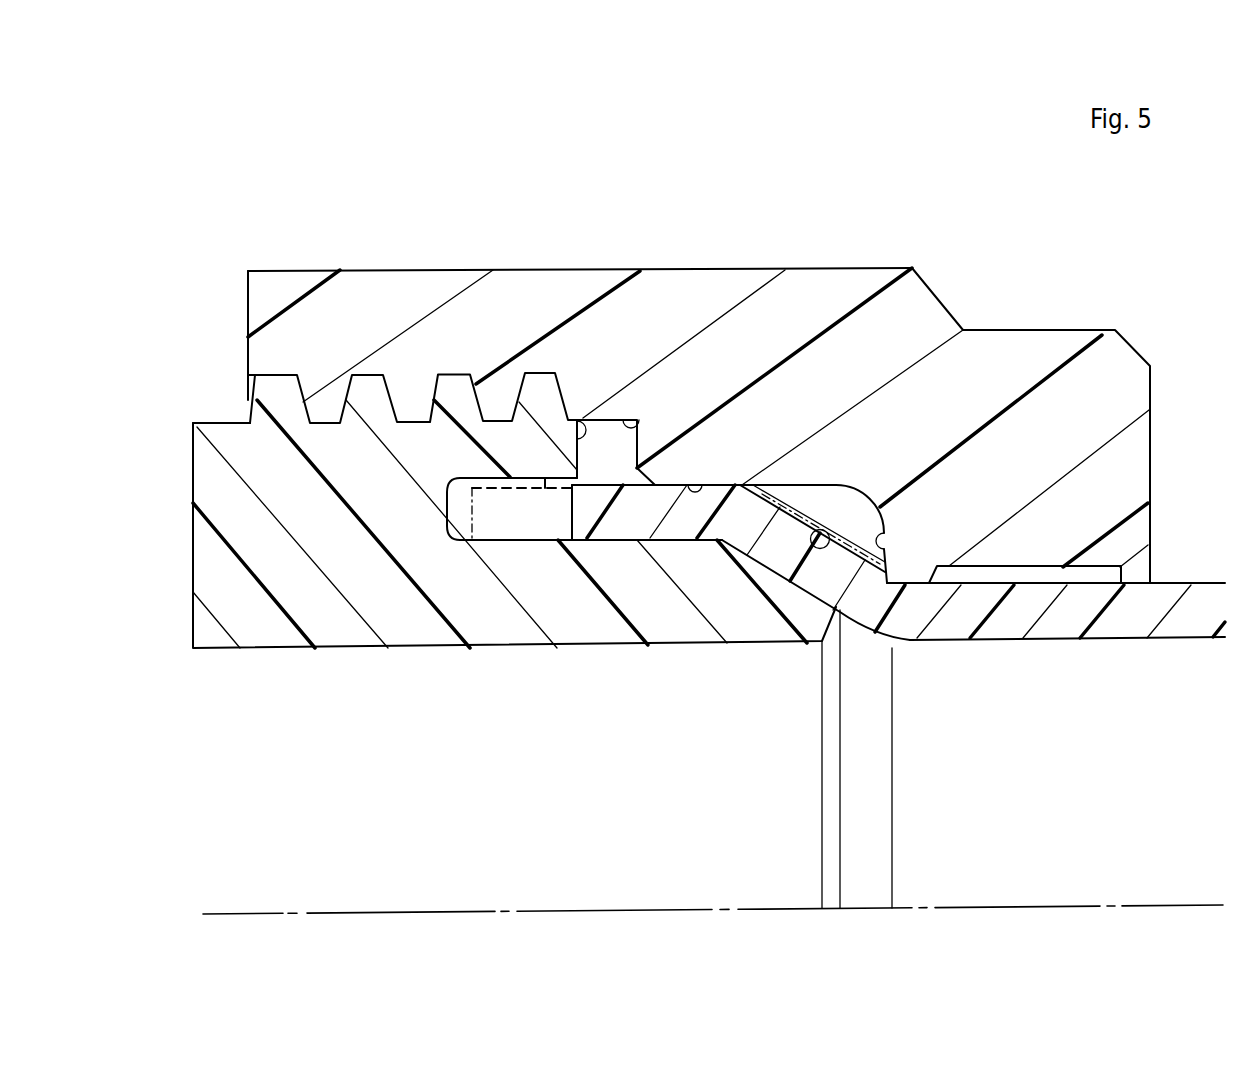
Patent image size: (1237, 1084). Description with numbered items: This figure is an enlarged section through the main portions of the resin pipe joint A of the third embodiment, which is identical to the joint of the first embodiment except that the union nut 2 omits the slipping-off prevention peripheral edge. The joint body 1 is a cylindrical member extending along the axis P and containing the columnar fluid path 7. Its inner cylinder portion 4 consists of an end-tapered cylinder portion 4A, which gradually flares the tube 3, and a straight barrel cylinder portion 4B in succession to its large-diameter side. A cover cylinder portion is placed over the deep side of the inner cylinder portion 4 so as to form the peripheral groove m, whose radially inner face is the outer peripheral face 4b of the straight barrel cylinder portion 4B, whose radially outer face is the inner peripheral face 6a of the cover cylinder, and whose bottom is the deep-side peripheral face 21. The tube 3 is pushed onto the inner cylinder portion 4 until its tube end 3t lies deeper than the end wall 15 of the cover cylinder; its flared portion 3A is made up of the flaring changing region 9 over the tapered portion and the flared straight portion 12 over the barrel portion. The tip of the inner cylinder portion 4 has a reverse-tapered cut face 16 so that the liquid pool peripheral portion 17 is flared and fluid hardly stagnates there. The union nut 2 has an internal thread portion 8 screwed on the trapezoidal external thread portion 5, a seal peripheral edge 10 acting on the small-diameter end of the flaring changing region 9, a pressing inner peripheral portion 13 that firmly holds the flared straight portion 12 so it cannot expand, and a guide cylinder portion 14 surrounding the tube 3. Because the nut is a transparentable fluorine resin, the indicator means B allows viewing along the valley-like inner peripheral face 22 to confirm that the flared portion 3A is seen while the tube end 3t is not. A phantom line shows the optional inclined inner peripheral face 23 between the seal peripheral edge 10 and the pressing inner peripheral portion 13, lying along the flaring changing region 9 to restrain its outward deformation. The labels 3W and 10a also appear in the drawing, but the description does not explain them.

The joint body 1 is at (224, 421).
The union nut 2 is at (963, 313).
The tube 3 is at (1173, 587).
The flared portion 3A is at (690, 544).
The tube end 3t is at (450, 537).
The tire width direction 3W is at (1047, 825).
The inner cylinder portion 4 is at (514, 538).
The end-tapered cylinder portion 4A is at (800, 620).
The straight barrel cylinder portion 4B is at (432, 571).
The outer peripheral face of the straight barrel cylinder portion 4b is at (668, 538).
The external thread portion 5 is at (370, 373).
The inner peripheral face of the cover cylinder portion 6a is at (549, 495).
The fluid path 7 is at (331, 827).
The internal thread portion 8 is at (324, 410).
The flaring changing region 9 is at (773, 572).
The seal peripheral edge 10 is at (927, 588).
The rounded corner of side plate 10a is at (888, 530).
The flared straight portion 12 is at (622, 532).
The pressing inner peripheral portion 13 is at (703, 483).
The guide cylinder portion 14 is at (1060, 548).
The end wall 15 is at (580, 417).
The cut face 16 is at (840, 640).
The liquid pool peripheral portion 17 is at (846, 622).
The deep-side peripheral face 21 is at (452, 498).
The valley-like inner peripheral face 22 is at (641, 420).
The inclined inner peripheral face 23 is at (836, 522).
The resin pipe joint A is at (890, 244).
The indicator means B is at (630, 409).
The peripheral groove m is at (481, 513).
The axis P is at (446, 912).